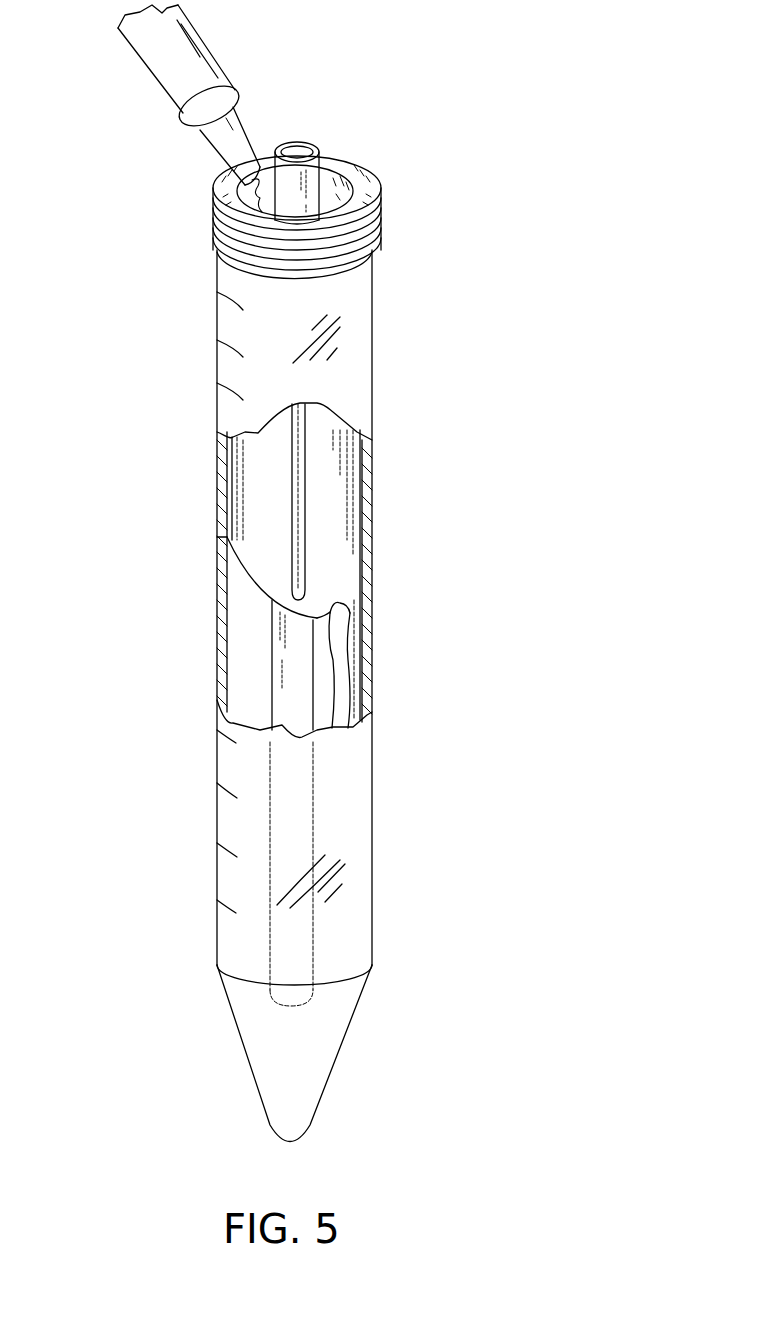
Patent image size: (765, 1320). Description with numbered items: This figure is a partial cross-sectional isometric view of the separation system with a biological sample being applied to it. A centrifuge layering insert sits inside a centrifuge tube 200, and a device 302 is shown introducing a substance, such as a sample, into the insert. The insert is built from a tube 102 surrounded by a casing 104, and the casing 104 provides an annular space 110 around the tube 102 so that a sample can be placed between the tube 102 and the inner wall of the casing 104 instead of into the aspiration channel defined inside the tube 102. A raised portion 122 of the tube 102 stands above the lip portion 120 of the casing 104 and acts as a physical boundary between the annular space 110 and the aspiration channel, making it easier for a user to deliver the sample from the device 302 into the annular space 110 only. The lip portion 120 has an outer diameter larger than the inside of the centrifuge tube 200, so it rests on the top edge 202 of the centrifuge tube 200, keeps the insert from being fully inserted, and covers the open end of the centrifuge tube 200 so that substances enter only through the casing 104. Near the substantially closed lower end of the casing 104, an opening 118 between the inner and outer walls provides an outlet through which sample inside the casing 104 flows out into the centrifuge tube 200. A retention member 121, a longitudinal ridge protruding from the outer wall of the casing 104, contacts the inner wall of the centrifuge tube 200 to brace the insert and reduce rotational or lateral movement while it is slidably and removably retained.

The device 302 is at (237, 128).
The raised portion 122 is at (322, 180).
The annular space 110 is at (355, 173).
The lip portion 120 is at (382, 176).
The top edge 202 is at (380, 202).
The centrifuge tube 200 is at (353, 342).
The retention member 121 is at (295, 513).
The casing 104 is at (328, 480).
The opening 118 is at (335, 598).
The tube 102 is at (295, 650).